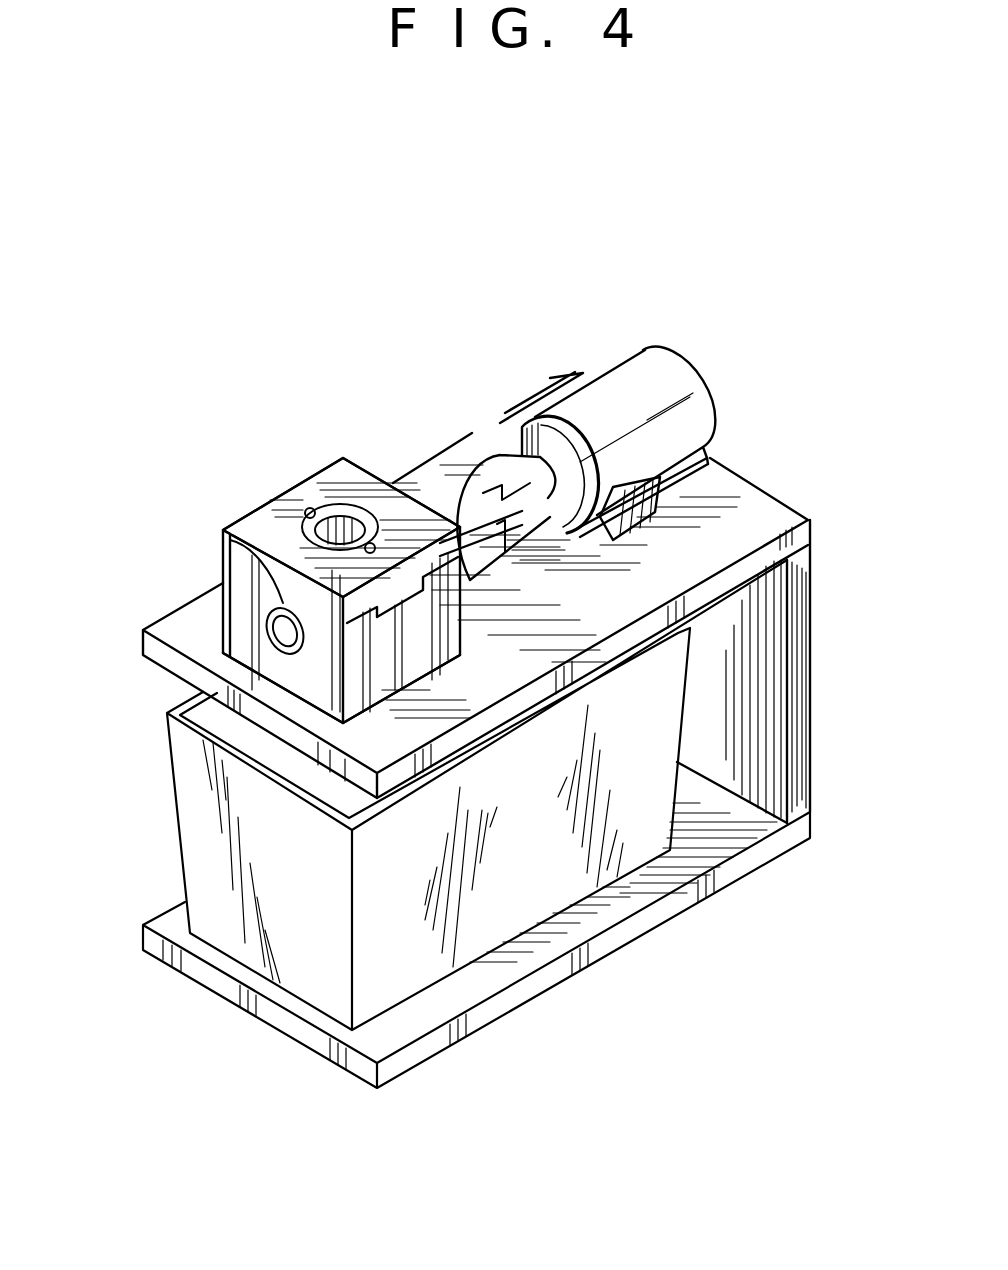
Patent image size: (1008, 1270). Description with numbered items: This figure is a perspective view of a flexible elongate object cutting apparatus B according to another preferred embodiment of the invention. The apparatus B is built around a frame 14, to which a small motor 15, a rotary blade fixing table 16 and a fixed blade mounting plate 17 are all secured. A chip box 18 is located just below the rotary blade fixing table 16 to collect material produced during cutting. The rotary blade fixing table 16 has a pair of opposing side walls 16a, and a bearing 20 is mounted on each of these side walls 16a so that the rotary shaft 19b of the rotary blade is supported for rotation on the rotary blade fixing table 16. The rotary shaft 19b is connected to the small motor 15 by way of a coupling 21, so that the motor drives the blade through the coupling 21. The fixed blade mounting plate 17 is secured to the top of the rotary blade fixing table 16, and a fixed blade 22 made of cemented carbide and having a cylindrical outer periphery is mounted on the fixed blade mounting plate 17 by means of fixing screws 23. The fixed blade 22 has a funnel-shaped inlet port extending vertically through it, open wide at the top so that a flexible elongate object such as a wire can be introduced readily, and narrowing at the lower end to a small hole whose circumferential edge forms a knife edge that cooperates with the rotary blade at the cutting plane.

The frame 14 is at (813, 662).
The small motor 15 is at (693, 408).
The rotary blade fixing table 16 is at (252, 560).
The side wall 16a is at (245, 650).
The fixed blade mounting plate 17 is at (302, 503).
The chip box 18 is at (190, 822).
The rotary shaft 19b is at (283, 600).
The bearing 20 is at (268, 632).
The coupling 21 is at (492, 455).
The fixed blade 22 is at (343, 508).
The fixing screws 23 is at (370, 543).
The flexible elongate object cutting apparatus B is at (555, 315).